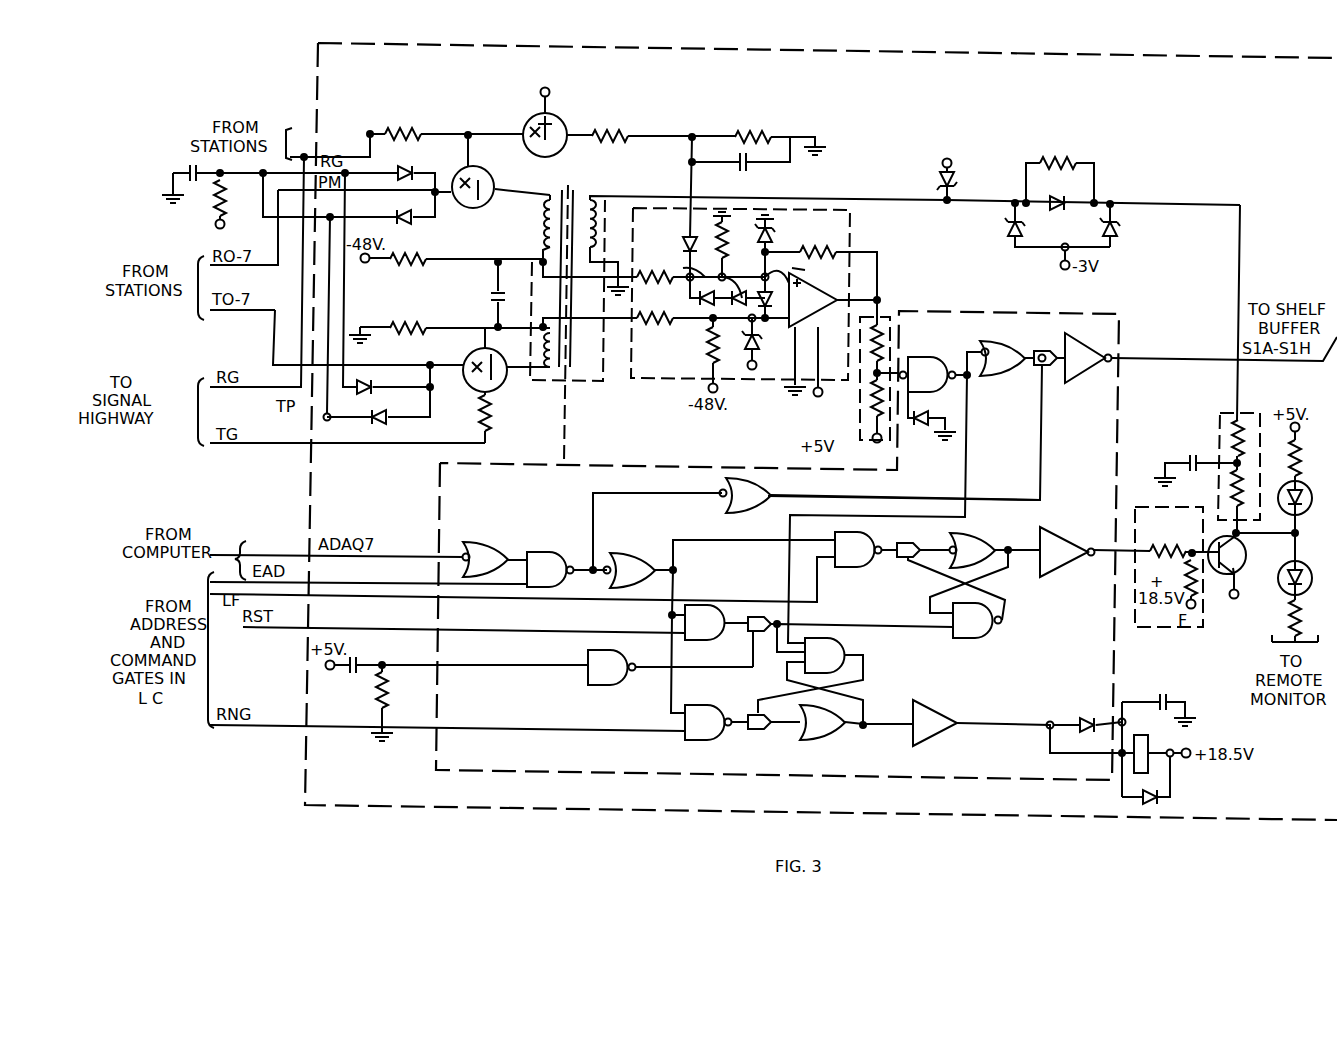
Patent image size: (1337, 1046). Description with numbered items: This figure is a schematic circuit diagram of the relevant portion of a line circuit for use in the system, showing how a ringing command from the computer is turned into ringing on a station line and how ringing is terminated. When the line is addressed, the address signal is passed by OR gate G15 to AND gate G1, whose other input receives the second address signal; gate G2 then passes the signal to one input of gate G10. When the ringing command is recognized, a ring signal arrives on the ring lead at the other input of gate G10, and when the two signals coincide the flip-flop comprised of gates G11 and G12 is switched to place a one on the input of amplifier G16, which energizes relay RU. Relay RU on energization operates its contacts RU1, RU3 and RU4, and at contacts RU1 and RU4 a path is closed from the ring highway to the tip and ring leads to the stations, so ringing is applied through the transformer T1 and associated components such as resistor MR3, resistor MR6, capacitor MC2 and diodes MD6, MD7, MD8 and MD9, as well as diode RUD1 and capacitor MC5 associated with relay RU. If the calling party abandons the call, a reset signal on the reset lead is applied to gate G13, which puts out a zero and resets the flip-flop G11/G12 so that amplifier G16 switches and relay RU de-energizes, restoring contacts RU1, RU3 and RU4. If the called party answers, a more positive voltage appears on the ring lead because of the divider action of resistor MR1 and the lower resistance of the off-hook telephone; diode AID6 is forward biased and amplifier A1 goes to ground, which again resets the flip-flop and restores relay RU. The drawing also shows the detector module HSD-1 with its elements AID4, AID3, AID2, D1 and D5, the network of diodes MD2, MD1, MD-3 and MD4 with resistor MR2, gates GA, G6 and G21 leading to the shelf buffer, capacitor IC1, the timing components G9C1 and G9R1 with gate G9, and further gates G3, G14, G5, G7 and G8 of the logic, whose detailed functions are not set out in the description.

The resistor MR1 is at (446, 123).
The diode MD6 is at (403, 163).
The diode MD7 is at (397, 216).
The RU relay contact RU4 is at (501, 198).
The RU relay contact RU3 is at (552, 123).
The resistor MR3 is at (662, 125).
The resistor MR6 is at (778, 132).
The capacitor MC2 is at (741, 164).
The transformer T1 is at (568, 316).
The RU relay contact RU1 is at (485, 386).
The diode MD8 is at (384, 381).
The diode MD9 is at (398, 425).
The high speed detector HSD-1 is at (850, 232).
The diode AID6 is at (684, 244).
The resistor AID4 is at (700, 275).
The resistor and diodes AID3 is at (712, 300).
The coupling element AID2 is at (804, 271).
The amplifier A1 is at (830, 344).
The zener diode D1 is at (773, 238).
The zener diode D5 is at (768, 347).
The zener diode MD2 is at (958, 170).
The resistor MR2 is at (1060, 170).
The diode MD1 is at (1078, 190).
The zener diode MD-3 is at (1008, 234).
The zener diode MD4 is at (1117, 232).
The NAND gate GA is at (934, 398).
The OR gate G6 is at (1022, 358).
The inverter G21 is at (1201, 367).
The capacitor IC1 is at (1195, 459).
The capacitor MC5 is at (1175, 684).
The RU relay RU is at (1147, 744).
The diode RUD1 is at (1160, 805).
The capacitor G9C1 is at (364, 655).
The resistor G9R1 is at (376, 682).
The OR gate G15 is at (494, 550).
The AND gate G1 is at (560, 556).
The gate G2 is at (638, 556).
The OR gate G3 is at (741, 508).
The NAND gate G14 is at (846, 562).
The OR gate G5 is at (976, 540).
The inverter G7 is at (1056, 546).
The NAND gate G8 is at (966, 636).
The gate G13 is at (694, 638).
The flip-flop gate G12 is at (838, 645).
The NAND gate G9 is at (598, 680).
The gate G10 is at (702, 740).
The flip-flop gate G11 is at (836, 732).
The amplifier G16 is at (934, 740).